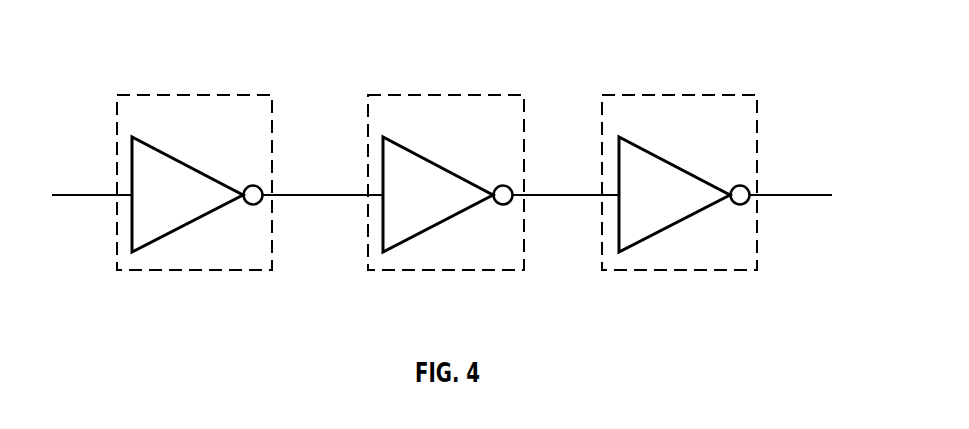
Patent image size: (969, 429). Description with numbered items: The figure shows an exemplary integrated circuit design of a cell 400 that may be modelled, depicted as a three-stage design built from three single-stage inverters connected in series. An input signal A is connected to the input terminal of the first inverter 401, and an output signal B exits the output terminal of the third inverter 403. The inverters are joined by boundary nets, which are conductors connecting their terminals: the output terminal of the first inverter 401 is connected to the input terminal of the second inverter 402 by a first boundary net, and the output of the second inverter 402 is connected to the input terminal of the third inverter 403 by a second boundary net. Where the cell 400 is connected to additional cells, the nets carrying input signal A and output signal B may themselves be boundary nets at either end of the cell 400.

The cell 400 is at (78, 48).
The first inverter 401 is at (194, 182).
The second inverter 402 is at (446, 182).
The third inverter 403 is at (679, 182).